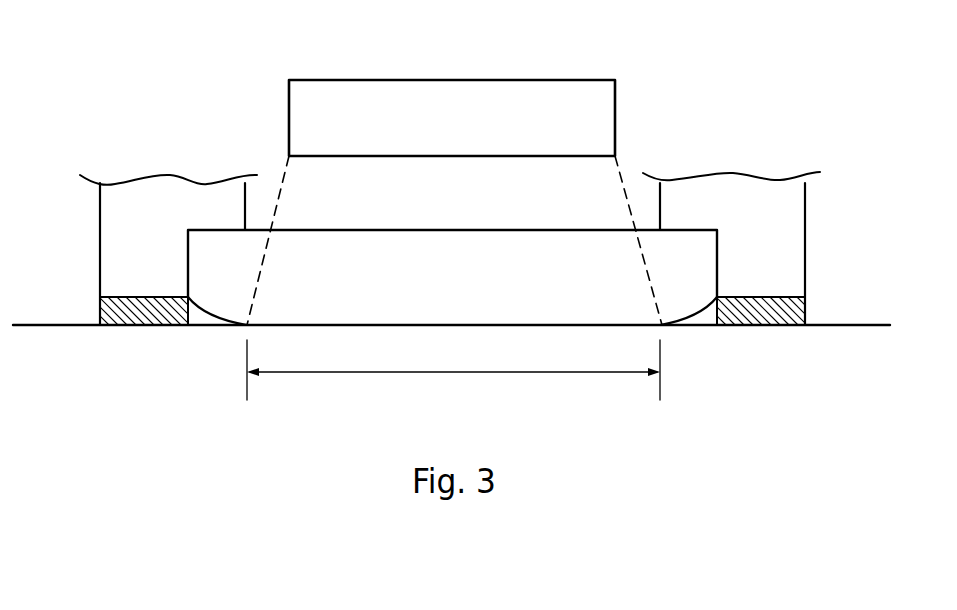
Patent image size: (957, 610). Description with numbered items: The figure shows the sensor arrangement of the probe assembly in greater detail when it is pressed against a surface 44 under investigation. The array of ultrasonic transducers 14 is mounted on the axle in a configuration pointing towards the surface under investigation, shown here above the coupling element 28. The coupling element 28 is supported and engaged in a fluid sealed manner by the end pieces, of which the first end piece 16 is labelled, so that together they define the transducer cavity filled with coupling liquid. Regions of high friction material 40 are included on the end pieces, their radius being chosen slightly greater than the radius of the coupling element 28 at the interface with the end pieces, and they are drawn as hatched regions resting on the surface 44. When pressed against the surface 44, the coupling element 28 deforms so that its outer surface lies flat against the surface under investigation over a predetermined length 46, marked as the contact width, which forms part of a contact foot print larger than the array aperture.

The array of ultrasonic transducers 14 is at (533, 92).
The coupling element 28 is at (410, 258).
The first end piece 16 is at (790, 238).
The surface under investigation 44 is at (67, 325).
The high friction material 40 is at (763, 325).
The predetermined length 46 is at (357, 373).